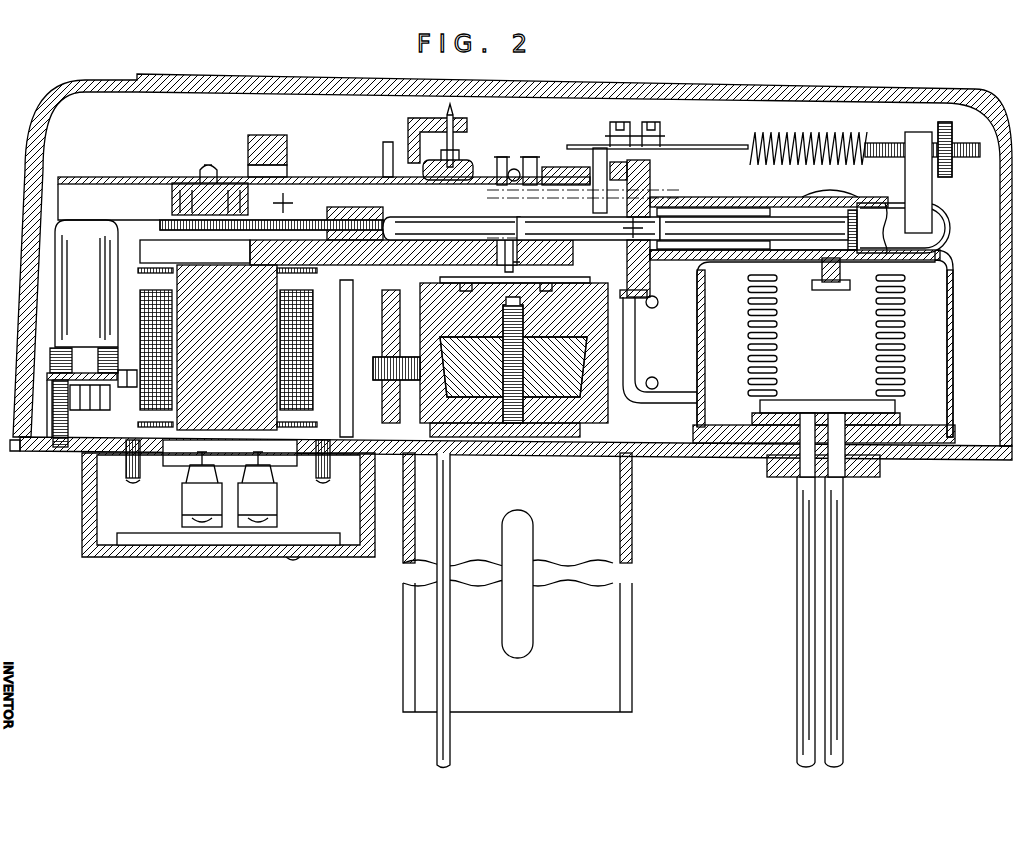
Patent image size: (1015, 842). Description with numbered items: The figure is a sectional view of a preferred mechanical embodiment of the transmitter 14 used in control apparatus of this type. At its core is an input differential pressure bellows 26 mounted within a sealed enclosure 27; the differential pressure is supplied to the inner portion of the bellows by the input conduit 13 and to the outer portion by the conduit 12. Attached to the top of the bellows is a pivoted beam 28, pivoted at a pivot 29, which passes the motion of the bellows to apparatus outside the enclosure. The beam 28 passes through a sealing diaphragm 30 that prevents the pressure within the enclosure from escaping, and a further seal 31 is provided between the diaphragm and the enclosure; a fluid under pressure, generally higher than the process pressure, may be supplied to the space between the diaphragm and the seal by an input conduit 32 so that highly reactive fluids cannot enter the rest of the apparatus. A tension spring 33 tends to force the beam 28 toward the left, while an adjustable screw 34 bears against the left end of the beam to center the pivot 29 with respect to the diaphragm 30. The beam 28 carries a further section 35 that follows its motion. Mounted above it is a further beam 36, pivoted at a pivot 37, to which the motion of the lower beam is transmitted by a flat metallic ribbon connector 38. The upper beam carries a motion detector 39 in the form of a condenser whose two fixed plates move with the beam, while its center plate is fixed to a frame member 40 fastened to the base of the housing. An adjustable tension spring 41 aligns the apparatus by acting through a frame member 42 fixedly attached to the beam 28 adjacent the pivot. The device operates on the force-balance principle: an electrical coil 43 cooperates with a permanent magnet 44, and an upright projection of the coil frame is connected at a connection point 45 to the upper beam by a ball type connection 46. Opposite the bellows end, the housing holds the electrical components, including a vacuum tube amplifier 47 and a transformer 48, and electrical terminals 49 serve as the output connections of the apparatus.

The conduit 12 is at (803, 673).
The input conduit 13 is at (838, 680).
The transmitter 14 is at (870, 77).
The input differential pressure bellows 26 is at (903, 335).
The sealed enclosure 27 is at (953, 378).
The pivoted beam 28 is at (778, 230).
The pivot 29 is at (645, 228).
The sealing diaphragm 30 is at (632, 182).
The seal 31 is at (664, 201).
The input conduit 32 is at (450, 674).
The tension spring 33 is at (688, 262).
The adjustable screw 34 is at (311, 218).
The further section 35 is at (376, 246).
The further beam 36 is at (143, 192).
The pivot 37 is at (291, 199).
The flat metallic ribbon connector 38 is at (247, 233).
The motion detector 39 is at (474, 166).
The frame member 40 is at (467, 122).
The adjustable tension spring 41 is at (808, 131).
The frame member 42 is at (603, 160).
The electrical coil 43 is at (593, 277).
The permanent magnet 44 is at (608, 325).
The connection point 45 is at (540, 170).
The ball type connection 46 is at (513, 268).
The vacuum tube amplifier 47 is at (90, 245).
The transformer 48 is at (313, 341).
The electrical terminals 49 is at (253, 500).